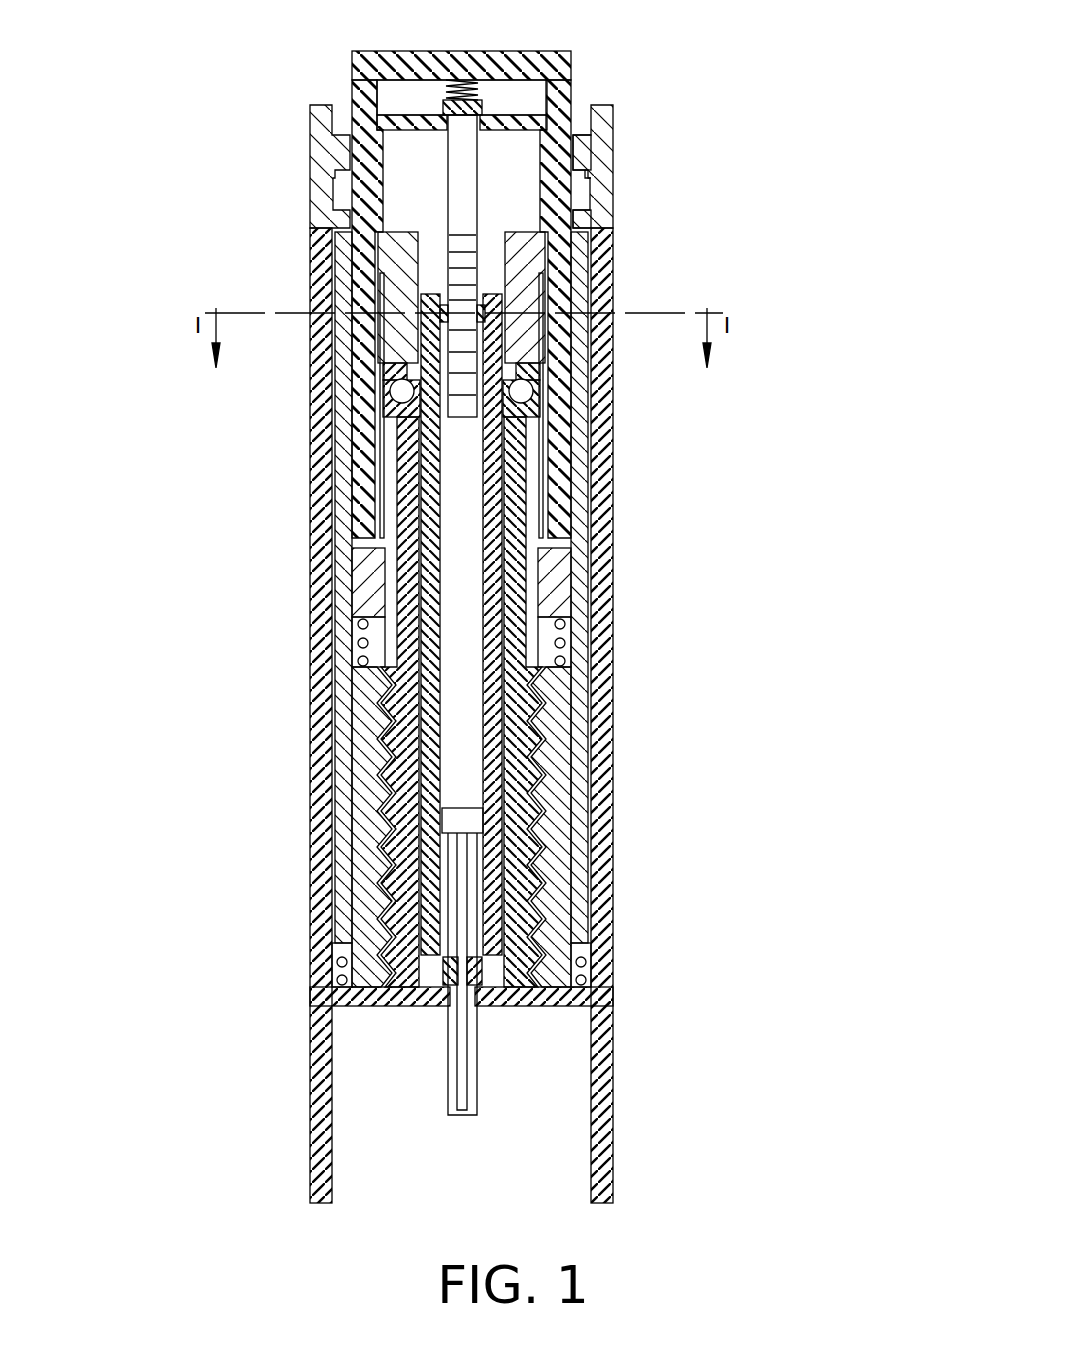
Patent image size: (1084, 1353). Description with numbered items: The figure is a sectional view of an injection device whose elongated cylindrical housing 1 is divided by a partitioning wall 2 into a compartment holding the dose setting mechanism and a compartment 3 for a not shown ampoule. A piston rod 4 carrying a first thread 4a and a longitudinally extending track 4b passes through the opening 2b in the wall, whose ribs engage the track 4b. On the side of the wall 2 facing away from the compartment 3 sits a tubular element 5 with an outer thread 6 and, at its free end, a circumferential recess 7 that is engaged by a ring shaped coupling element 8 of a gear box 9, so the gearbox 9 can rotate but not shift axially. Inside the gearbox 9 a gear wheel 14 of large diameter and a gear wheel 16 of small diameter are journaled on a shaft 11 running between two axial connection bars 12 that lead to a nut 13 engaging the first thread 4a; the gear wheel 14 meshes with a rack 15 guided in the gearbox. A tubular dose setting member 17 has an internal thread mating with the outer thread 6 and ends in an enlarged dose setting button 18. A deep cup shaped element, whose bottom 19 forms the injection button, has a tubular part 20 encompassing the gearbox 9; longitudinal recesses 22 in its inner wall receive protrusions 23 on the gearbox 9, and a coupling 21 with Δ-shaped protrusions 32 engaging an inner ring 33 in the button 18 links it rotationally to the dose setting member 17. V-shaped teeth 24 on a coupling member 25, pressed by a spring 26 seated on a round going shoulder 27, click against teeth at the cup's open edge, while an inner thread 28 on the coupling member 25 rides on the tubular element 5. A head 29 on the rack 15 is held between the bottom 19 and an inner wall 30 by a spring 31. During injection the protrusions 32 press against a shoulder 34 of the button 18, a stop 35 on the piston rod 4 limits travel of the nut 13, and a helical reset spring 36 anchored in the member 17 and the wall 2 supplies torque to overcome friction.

The housing 1 is at (320, 800).
The partitioning wall 2 is at (380, 1003).
The opening 2b is at (555, 1005).
The compartment 3 is at (360, 1115).
The piston rod 4 is at (455, 885).
The first thread 4a is at (470, 880).
The longitudinally extending track 4b is at (478, 1075).
The tubular element 5 is at (405, 490).
The outer thread 6 is at (378, 735).
The circumferential recess 7 is at (396, 388).
The ring shaped coupling element 8 is at (395, 402).
The gear box 9 is at (440, 312).
The shaft 11 is at (485, 305).
The axial connection bars 12 is at (552, 483).
The nut 13 is at (338, 965).
The gear wheel 14 is at (400, 290).
The rack 15 is at (413, 370).
The gear wheel 16 is at (430, 310).
The tubular dose setting member 17 is at (345, 550).
The dose setting button 18 is at (318, 130).
The bottom 19 is at (500, 53).
The tubular part 20 is at (365, 438).
The coupling 21 is at (583, 116).
The longitudinal recesses 22 is at (545, 345).
The protrusions 23 is at (580, 225).
The V-shaped teeth 24 is at (555, 550).
The coupling member 25 is at (368, 600).
The spring 26 is at (363, 655).
The round going shoulder 27 is at (568, 660).
The thread 28 is at (382, 512).
The head 29 is at (548, 82).
The inner wall 30 is at (410, 118).
The spring 31 is at (460, 84).
The Δ-shaped protrusions 32 is at (590, 180).
The inner ring 33 is at (587, 152).
The shoulder 34 is at (447, 300).
The stop 35 is at (478, 830).
The helical reset spring 36 is at (583, 963).